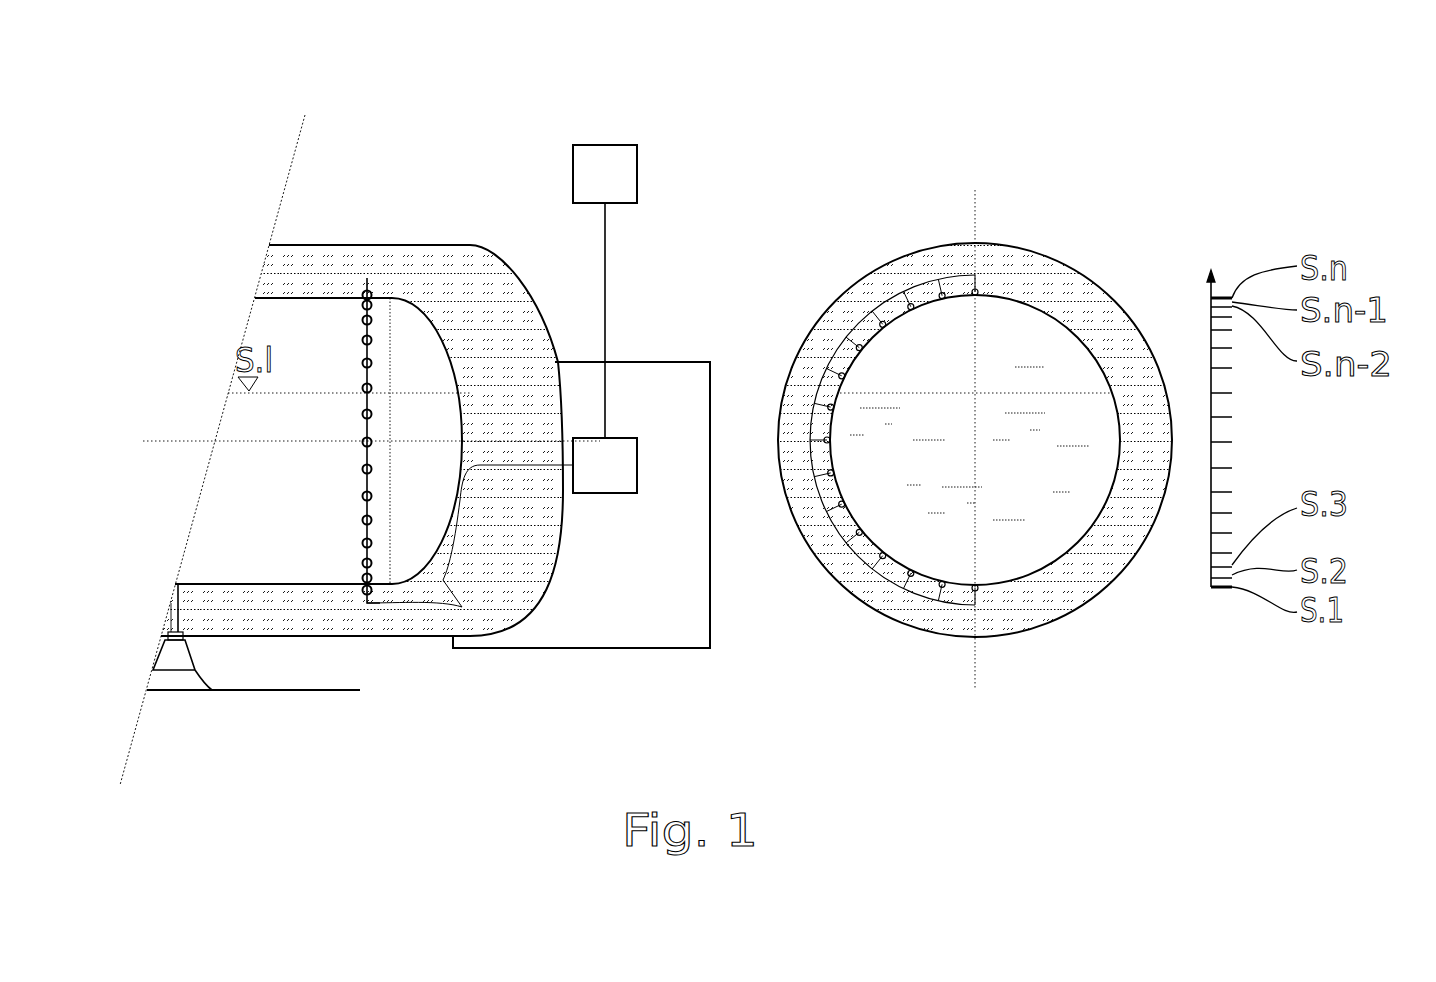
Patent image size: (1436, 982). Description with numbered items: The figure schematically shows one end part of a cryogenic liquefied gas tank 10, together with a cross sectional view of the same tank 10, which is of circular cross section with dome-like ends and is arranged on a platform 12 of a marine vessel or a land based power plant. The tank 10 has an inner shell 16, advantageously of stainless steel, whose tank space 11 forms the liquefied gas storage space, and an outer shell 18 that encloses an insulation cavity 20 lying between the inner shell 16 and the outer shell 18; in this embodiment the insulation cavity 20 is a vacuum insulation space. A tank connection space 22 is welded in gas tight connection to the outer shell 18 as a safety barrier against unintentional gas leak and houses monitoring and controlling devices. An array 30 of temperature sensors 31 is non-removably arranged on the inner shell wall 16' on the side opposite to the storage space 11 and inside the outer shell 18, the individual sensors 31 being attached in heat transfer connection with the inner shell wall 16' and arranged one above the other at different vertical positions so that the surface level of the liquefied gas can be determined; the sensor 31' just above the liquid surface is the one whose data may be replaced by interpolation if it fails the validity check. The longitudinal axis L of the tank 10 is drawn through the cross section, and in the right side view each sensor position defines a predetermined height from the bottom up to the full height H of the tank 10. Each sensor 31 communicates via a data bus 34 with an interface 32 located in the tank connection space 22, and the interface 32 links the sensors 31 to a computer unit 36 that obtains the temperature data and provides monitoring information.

The cryogenic liquefied gas tank 10 is at (413, 176).
The tank space 11 is at (365, 363).
The platform 12 is at (253, 733).
The inner shell 16 is at (666, 407).
The inner shell wall 16' is at (966, 412).
The outer shell 18 is at (322, 245).
The insulation cavity 20 is at (425, 638).
The tank connection space 22 is at (691, 635).
The array of temperature sensors 30 is at (350, 537).
The temperature sensor 31 is at (617, 452).
The sensor just above the liquid level 31' is at (279, 340).
The interface 32 is at (625, 483).
The data bus 34 is at (462, 607).
The computer unit 36 is at (625, 192).
The longitudinal axis L is at (371, 421).
The height of the tank H is at (992, 433).